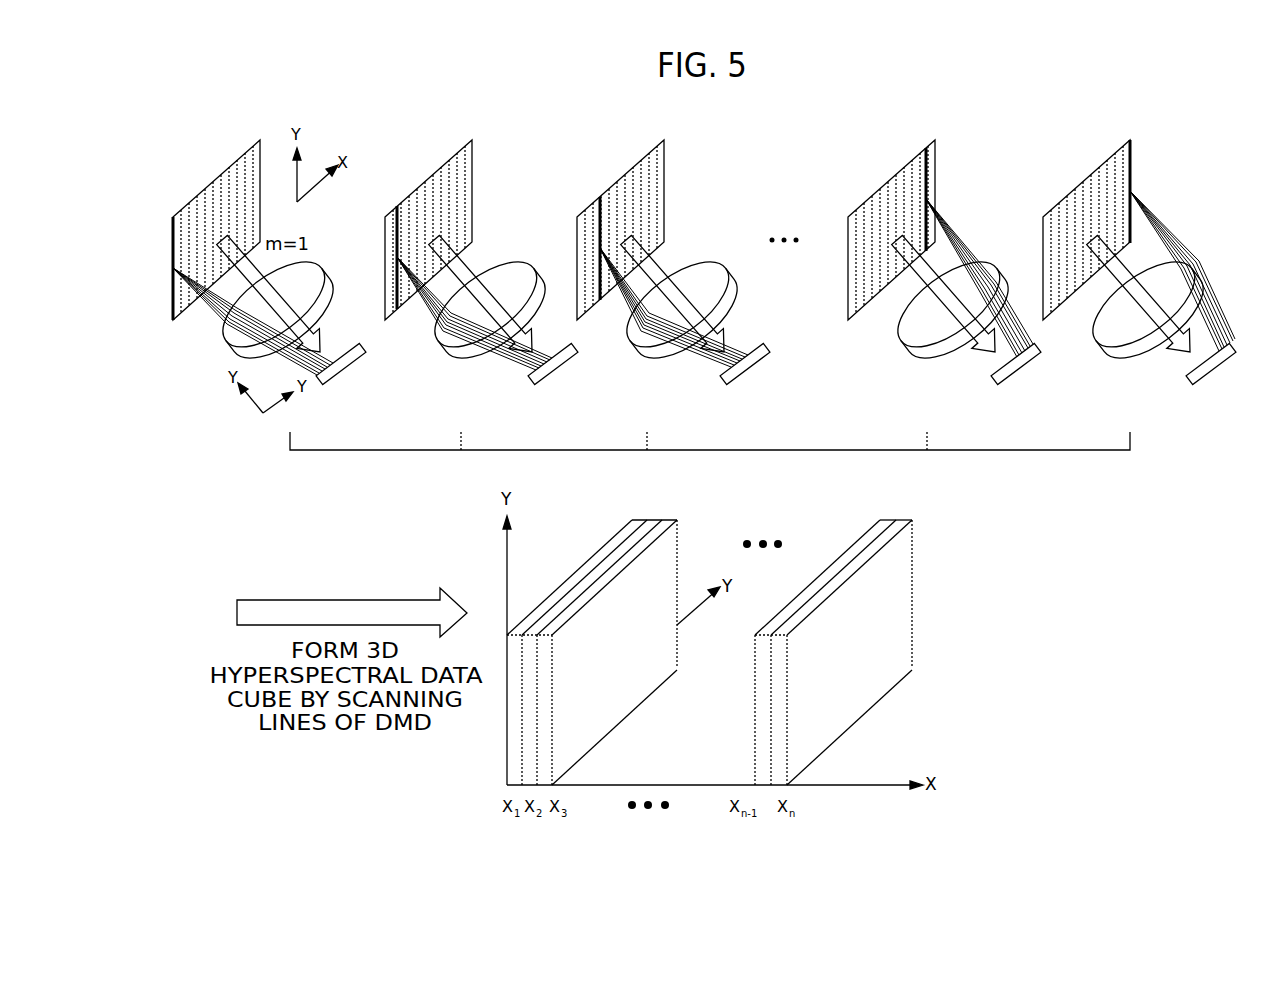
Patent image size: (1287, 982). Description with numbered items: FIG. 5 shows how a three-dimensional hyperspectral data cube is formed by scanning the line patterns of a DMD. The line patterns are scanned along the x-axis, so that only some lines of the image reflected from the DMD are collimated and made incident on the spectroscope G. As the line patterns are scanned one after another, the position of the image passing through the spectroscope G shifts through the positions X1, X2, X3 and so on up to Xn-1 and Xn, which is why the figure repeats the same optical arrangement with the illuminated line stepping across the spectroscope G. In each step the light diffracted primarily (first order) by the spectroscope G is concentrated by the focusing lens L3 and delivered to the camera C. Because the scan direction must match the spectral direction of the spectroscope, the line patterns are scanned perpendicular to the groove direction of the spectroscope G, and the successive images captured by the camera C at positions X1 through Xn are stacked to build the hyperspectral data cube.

The spectroscope G is at (259, 140).
The focusing lens L3 is at (235, 352).
The camera C is at (366, 348).
The first image position X1 is at (175, 251).
The second image position X2 is at (400, 241).
The third image position X3 is at (602, 232).
The (n-1)th image position Xn-1 is at (928, 181).
The nth image position Xn is at (1135, 178).